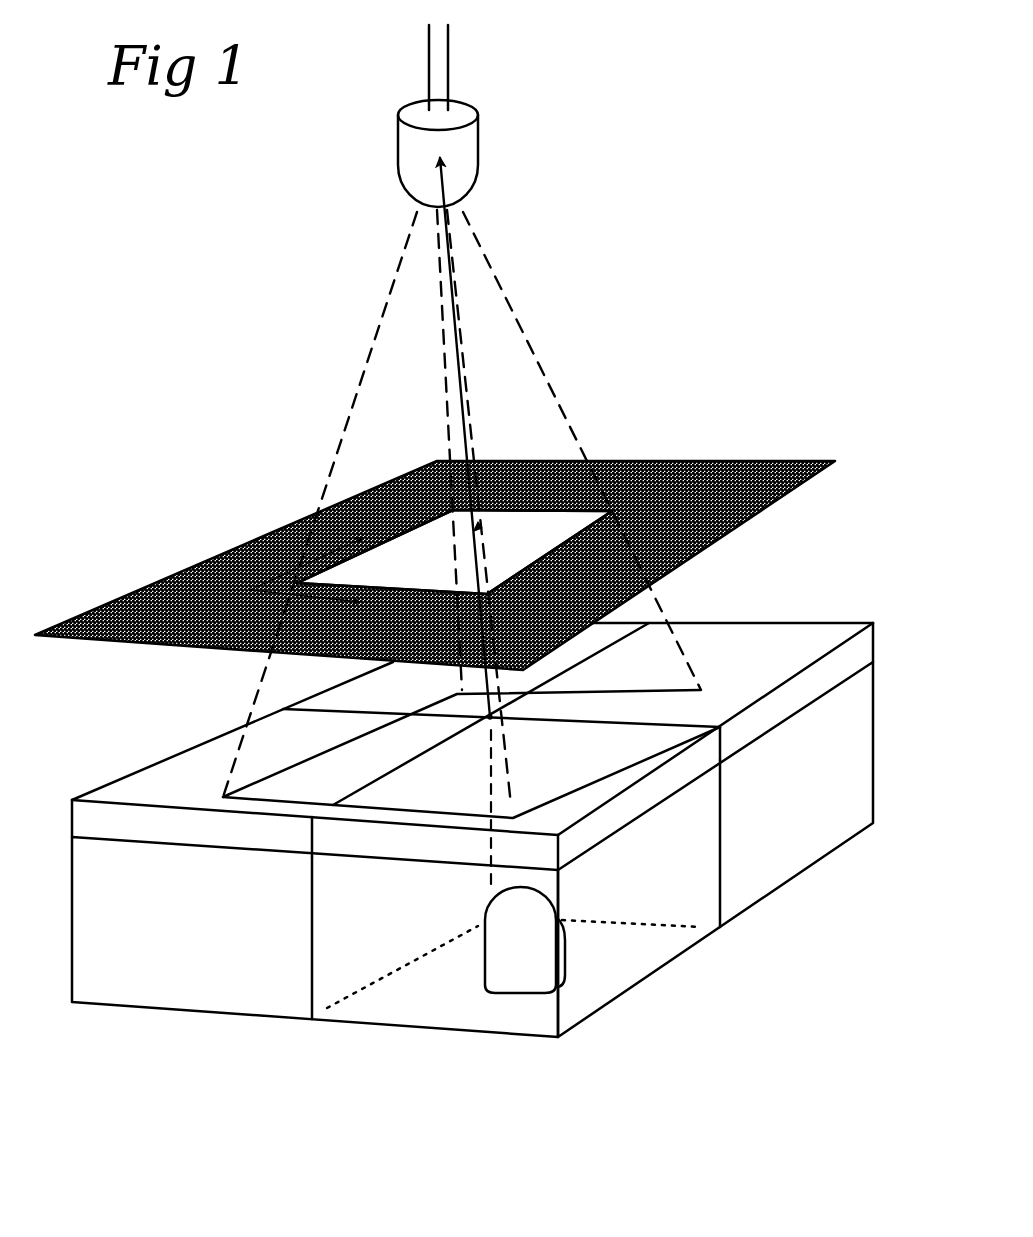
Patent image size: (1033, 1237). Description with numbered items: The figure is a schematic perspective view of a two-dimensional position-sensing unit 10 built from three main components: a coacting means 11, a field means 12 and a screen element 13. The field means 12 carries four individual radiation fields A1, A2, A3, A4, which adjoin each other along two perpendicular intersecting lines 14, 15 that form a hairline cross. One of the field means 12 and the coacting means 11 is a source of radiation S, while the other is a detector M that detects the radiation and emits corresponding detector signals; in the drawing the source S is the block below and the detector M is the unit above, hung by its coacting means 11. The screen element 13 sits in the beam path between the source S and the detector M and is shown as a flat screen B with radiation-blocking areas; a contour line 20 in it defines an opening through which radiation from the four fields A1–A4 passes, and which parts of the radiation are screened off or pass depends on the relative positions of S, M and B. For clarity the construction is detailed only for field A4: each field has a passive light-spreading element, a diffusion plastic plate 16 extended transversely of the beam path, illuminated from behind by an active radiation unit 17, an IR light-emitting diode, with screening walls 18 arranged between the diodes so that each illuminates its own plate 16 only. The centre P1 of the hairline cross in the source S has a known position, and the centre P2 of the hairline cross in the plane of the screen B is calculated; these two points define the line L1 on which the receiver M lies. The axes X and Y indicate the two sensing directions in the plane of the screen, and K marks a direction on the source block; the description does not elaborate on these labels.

The measuring apparatus 10 is at (258, 408).
The coacting means 11 is at (470, 100).
The field means 12 is at (760, 623).
The screen element 13 is at (634, 460).
The intersecting line 14 is at (587, 718).
The intersecting line 15 is at (400, 766).
The diffusion plastic plate 16 is at (868, 648).
The radiation unit 17 is at (505, 975).
The screening wall 18 is at (690, 905).
The contour line 20 is at (605, 513).
The detector M is at (497, 130).
The screen B is at (435, 523).
The source of radiation S is at (491, 804).
The line L1 is at (457, 329).
The centre of the hairline cross in the radiation source P1 is at (487, 717).
The centre of the hairline cross in the plane of the screen P2 is at (477, 531).
The radiation field A1 is at (827, 633).
The radiation field A2 is at (332, 700).
The radiation field A3 is at (170, 772).
The radiation field A4 is at (572, 805).
The edge direction K is at (300, 983).
The x axis X is at (326, 608).
The y axis Y is at (316, 545).